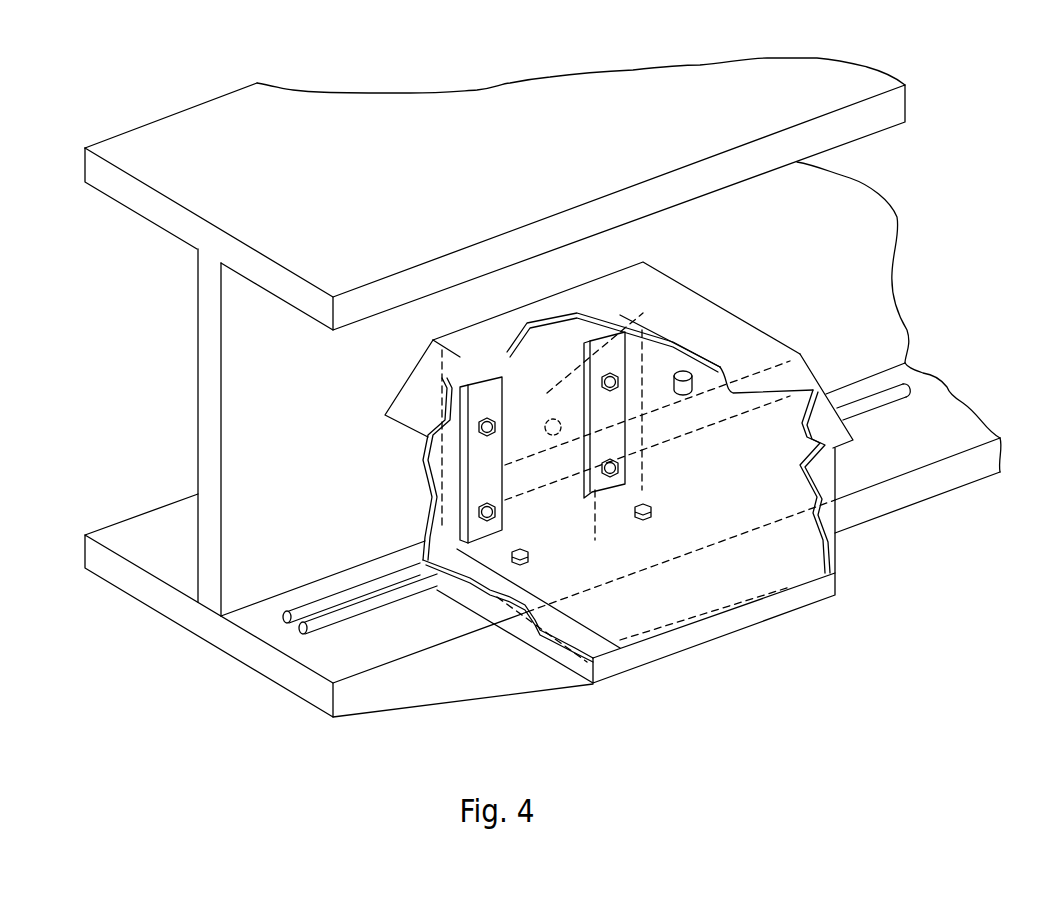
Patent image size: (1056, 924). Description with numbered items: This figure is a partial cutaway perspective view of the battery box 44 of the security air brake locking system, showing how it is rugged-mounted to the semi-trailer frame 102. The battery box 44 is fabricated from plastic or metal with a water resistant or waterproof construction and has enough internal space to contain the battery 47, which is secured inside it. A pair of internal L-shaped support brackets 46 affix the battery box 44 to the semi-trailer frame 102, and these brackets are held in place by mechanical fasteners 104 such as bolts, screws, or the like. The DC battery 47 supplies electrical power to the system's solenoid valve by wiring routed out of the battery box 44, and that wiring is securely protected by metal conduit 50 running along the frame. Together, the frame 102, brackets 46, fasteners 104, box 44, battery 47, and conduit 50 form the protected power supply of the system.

The semi-trailer frame 102 is at (210, 543).
The battery box 44 is at (705, 300).
The support brackets 46 is at (586, 341).
The battery 47 is at (690, 368).
The metal conduit 50 is at (330, 602).
The mechanical fasteners 104 is at (513, 553).